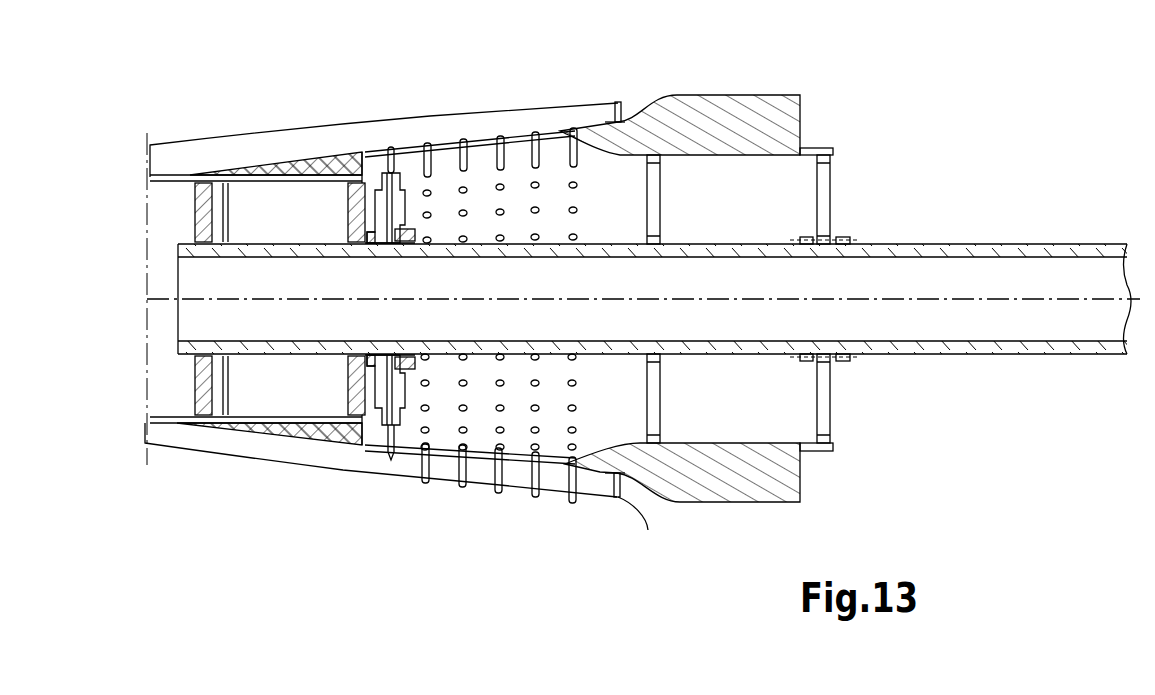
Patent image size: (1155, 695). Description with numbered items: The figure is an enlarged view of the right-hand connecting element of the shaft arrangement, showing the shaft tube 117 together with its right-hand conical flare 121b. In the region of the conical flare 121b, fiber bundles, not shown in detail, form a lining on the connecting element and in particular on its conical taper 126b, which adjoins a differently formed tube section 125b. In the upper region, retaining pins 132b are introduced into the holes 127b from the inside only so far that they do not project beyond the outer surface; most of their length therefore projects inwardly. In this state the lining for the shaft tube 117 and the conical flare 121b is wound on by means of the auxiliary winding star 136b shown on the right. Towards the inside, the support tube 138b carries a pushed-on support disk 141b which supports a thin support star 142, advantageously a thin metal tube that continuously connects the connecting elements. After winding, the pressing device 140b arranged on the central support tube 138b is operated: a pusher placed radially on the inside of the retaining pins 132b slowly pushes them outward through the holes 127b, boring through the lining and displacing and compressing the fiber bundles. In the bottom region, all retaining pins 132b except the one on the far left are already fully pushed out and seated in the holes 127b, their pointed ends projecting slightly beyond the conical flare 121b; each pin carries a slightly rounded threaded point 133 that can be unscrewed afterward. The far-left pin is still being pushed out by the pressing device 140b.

The shaft tube 117 is at (162, 153).
The support star 142 is at (147, 183).
The support disk 141b is at (193, 215).
The support tube 138b is at (982, 248).
The pressing device 140b is at (372, 165).
The conical flare 121b is at (408, 112).
The conical taper 126b is at (443, 127).
The holes 127b is at (498, 186).
The retaining pins 132b is at (553, 140).
The point 133 is at (573, 500).
The tube section 125b is at (735, 120).
The auxiliary winding star 136b is at (627, 122).